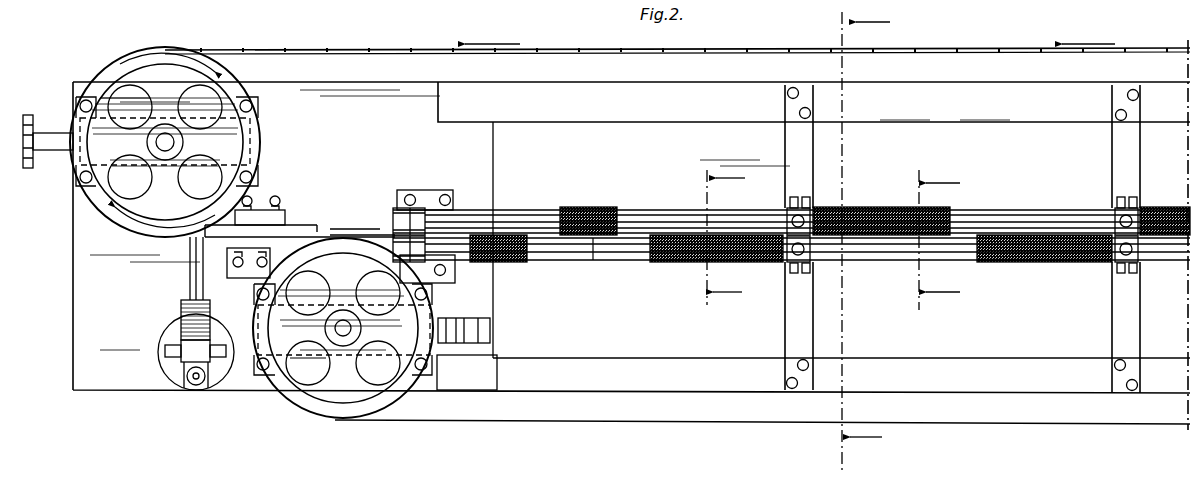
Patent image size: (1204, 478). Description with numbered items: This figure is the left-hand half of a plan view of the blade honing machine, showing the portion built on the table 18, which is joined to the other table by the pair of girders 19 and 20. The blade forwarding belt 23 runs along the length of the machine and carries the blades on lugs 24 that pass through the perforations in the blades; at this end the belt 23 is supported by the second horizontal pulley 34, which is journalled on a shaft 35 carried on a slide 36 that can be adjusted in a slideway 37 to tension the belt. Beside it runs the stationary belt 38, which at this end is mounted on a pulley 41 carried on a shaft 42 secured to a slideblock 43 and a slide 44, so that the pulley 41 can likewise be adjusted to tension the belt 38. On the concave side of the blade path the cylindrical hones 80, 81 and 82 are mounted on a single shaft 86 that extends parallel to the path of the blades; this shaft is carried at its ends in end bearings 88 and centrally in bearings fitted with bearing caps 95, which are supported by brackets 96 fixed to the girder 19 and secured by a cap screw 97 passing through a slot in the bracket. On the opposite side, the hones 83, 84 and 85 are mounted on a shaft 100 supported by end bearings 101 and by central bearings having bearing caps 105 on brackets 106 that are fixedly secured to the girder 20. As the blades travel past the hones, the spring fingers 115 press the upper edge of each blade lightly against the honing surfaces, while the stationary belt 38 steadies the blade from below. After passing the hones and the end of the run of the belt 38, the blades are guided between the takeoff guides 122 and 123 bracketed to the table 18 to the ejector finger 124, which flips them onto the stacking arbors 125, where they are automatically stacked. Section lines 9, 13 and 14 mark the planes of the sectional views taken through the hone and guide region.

The section line 9- 9 is at (861, 235).
The section line 13- 13 is at (932, 239).
The section line 14- 14 is at (717, 238).
The table 18 is at (378, 82).
The girder 19 is at (625, 84).
The girder 20 is at (950, 358).
The blade forwarding belt 23 is at (235, 52).
The lugs 24 is at (312, 54).
The second horizontal pulley 34 is at (118, 70).
The shaft 35 is at (160, 138).
The slide 36 is at (128, 160).
The slideway 37 is at (70, 158).
The stationary belt 38 is at (545, 424).
The pulley 41 is at (336, 417).
The shaft 42 is at (347, 340).
The slideblock 43 is at (300, 353).
The slide 44 is at (322, 358).
The hone 80 is at (1155, 208).
The hone 81 is at (850, 209).
The hone 82 is at (600, 208).
The hone 83 is at (1050, 262).
The hone 84 is at (695, 262).
The hone 85 is at (522, 262).
The shaft 86 is at (505, 211).
The end bearings 88 is at (418, 190).
The bearing caps 95 is at (787, 214).
The brackets 96 is at (785, 108).
The cap screw 97 is at (792, 198).
The shaft 100 is at (900, 246).
The end bearings 101 is at (455, 268).
The bearing caps 105 is at (790, 270).
The brackets 106 is at (785, 335).
The spring fingers 115 is at (597, 260).
The takeoff guide 122 is at (318, 226).
The takeoff guide 123 is at (220, 252).
The ejector finger 124 is at (248, 206).
The stacking arbors 125 is at (195, 294).